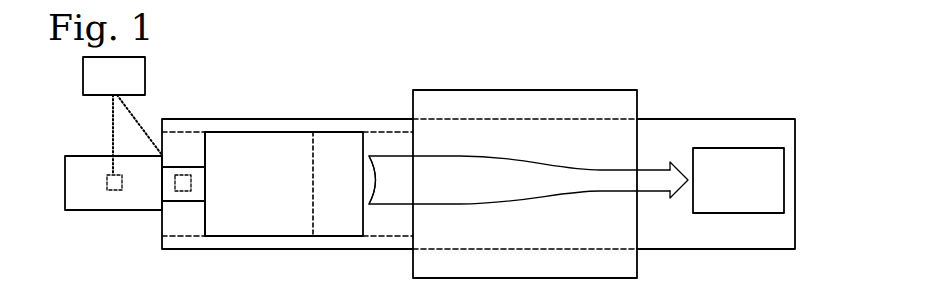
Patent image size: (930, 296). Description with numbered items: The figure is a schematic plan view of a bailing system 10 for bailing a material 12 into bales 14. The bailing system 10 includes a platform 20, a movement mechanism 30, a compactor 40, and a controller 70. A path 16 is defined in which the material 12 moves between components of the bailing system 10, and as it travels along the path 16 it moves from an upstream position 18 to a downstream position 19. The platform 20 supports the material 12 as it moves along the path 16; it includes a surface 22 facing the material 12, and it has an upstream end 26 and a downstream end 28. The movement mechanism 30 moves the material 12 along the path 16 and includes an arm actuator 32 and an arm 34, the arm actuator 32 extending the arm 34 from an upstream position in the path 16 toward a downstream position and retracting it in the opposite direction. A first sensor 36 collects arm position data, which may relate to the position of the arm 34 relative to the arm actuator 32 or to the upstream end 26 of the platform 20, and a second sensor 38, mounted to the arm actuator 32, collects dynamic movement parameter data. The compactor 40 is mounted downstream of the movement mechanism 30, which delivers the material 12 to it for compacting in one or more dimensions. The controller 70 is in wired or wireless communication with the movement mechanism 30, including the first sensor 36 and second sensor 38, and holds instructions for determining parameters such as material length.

The bailing system 10 is at (733, 68).
The movement mechanism 30 is at (72, 132).
The controller 70 is at (128, 85).
The arm actuator 32 is at (96, 190).
The second sensor 38 is at (110, 191).
The upstream end 26 is at (160, 233).
The arm 34 is at (197, 167).
The first sensor 36 is at (187, 193).
The material 12 is at (348, 194).
The compactor 40 is at (454, 114).
The downstream end 28 is at (795, 244).
The bale 14 is at (753, 192).
The path 16 is at (410, 191).
The upstream position 18 is at (378, 156).
The downstream position 19 is at (642, 168).
The platform 20 is at (403, 145).
The surface 22 is at (403, 240).